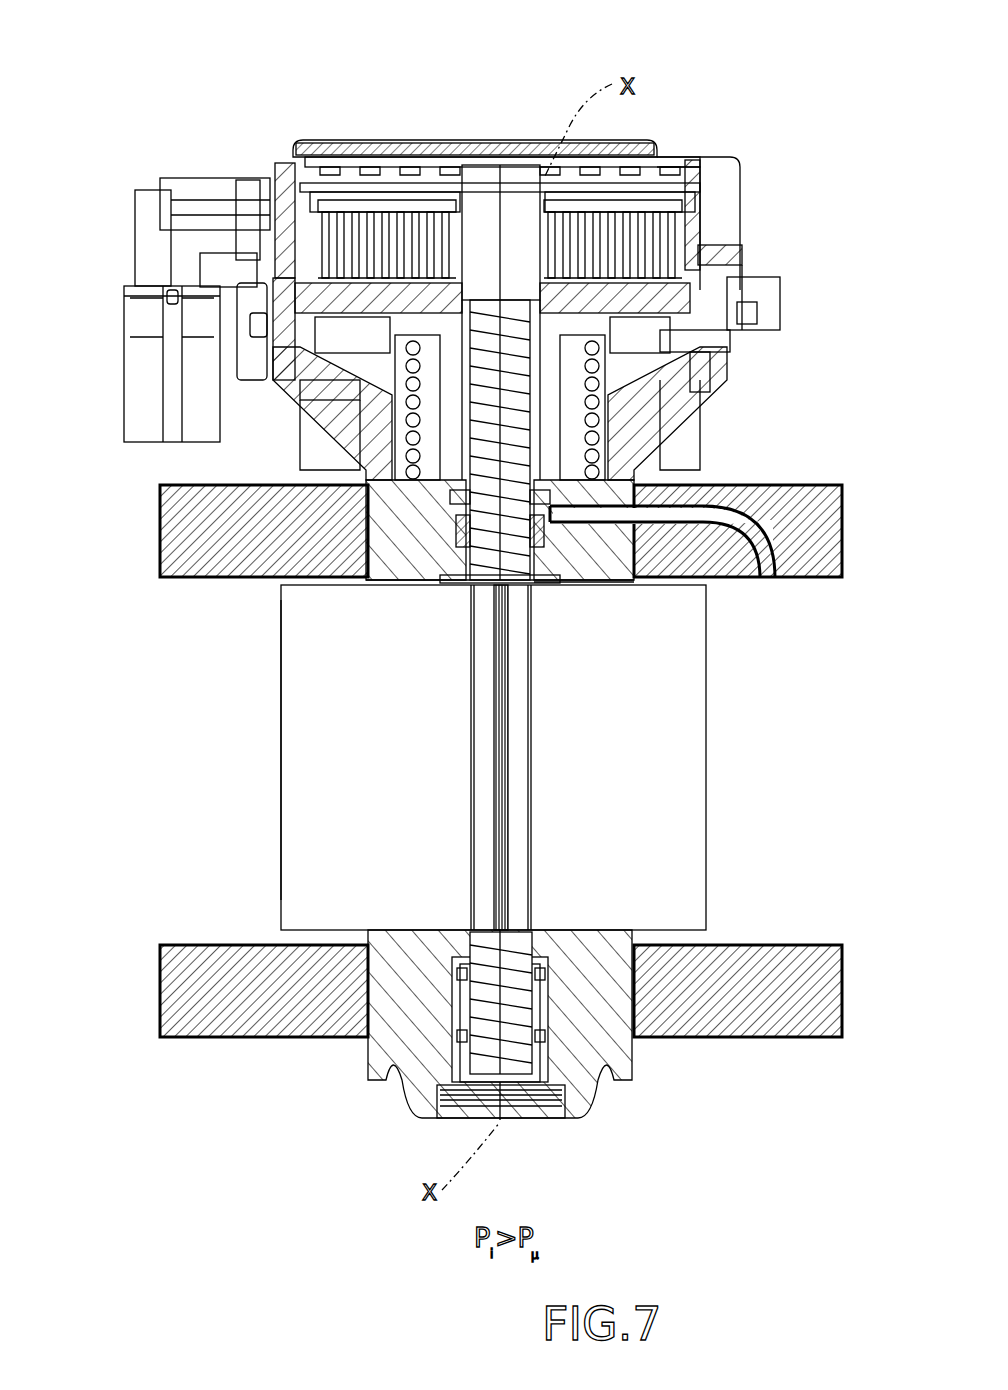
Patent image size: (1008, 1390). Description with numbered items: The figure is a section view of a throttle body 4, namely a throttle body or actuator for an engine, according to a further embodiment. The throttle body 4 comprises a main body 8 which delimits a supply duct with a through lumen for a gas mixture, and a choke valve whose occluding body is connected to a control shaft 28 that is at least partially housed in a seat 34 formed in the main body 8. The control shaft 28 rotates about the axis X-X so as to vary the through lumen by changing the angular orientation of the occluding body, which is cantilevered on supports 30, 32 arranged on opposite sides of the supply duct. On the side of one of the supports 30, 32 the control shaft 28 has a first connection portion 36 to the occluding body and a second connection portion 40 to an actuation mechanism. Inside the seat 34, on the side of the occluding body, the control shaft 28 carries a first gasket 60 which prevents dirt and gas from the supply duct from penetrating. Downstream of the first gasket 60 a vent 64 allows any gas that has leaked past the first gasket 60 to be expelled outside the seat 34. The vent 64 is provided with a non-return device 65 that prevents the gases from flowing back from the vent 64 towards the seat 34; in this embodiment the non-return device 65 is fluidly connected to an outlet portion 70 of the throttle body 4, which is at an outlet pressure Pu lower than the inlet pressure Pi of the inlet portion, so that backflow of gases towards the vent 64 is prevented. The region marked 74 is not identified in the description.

The throttle body 4 is at (136, 70).
The main body 8 is at (620, 1044).
The control shaft 28 is at (646, 322).
The support 30 is at (462, 1017).
The support 32 is at (474, 530).
The seat 34 is at (466, 586).
The first connection portion 36 is at (459, 522).
The second connection portion 40 is at (488, 250).
The first gasket 60 is at (564, 586).
The vent 64 is at (564, 502).
The non-return device 65 is at (787, 487).
The outlet portion 70 is at (676, 704).
The chamber wall 74 is at (282, 768).